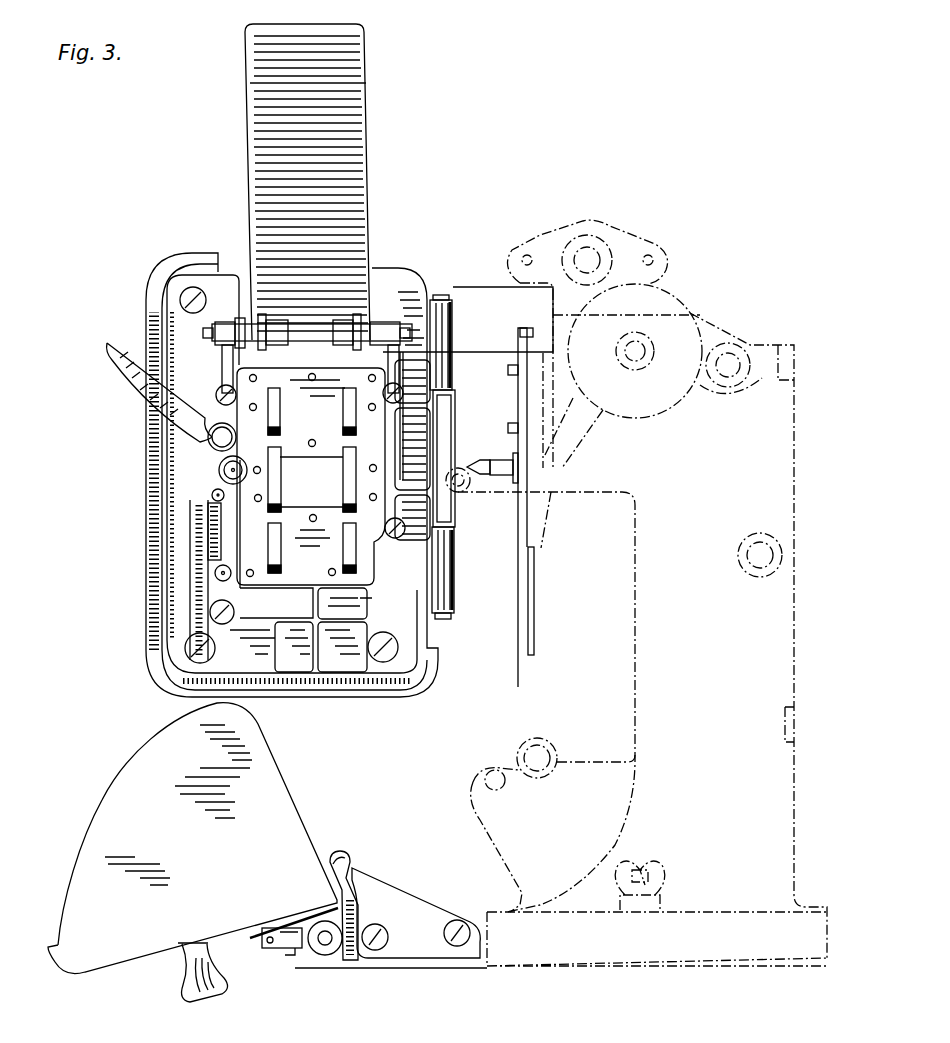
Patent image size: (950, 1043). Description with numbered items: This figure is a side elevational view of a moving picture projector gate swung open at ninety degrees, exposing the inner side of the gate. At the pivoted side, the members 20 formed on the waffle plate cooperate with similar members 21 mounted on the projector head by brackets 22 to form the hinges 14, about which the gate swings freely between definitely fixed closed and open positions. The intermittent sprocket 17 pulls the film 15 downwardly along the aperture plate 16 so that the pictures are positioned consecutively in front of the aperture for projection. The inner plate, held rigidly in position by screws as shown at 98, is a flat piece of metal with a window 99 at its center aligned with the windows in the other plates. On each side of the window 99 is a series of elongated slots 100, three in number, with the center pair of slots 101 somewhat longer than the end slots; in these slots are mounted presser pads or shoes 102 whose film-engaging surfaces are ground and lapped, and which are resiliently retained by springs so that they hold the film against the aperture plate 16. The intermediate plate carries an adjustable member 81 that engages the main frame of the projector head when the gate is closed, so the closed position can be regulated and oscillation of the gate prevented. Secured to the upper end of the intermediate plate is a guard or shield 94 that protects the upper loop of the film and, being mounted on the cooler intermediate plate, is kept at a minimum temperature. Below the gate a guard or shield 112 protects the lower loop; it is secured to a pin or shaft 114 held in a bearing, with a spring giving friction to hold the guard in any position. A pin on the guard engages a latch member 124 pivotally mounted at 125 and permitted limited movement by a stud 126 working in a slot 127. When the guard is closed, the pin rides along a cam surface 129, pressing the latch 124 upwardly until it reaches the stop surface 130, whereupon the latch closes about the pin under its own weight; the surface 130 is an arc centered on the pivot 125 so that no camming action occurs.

The guard or shield 94 is at (348, 161).
The adjustable member 81 is at (220, 448).
The window 99 is at (311, 476).
The presser pads or shoes 102 is at (344, 404).
The center pair of slots 101 is at (290, 468).
The elongated slots 100 is at (344, 550).
The screw attachment point 98 is at (250, 575).
The hinge members 20 is at (446, 302).
The hinge members 21 is at (455, 380).
The hinges 14 is at (455, 327).
The brackets 22 is at (495, 343).
The film 15 is at (521, 684).
The aperture plate 16 is at (534, 592).
The intermittent sprocket 17 is at (556, 757).
The guard or shield 112 is at (248, 781).
The pin or shaft 114 is at (322, 947).
The stop surface 130 is at (392, 903).
The cam surface 129 is at (352, 852).
The latch member 124 is at (400, 908).
The stud 126 is at (385, 945).
The pivot 125 is at (460, 922).
The slot 127 is at (378, 950).